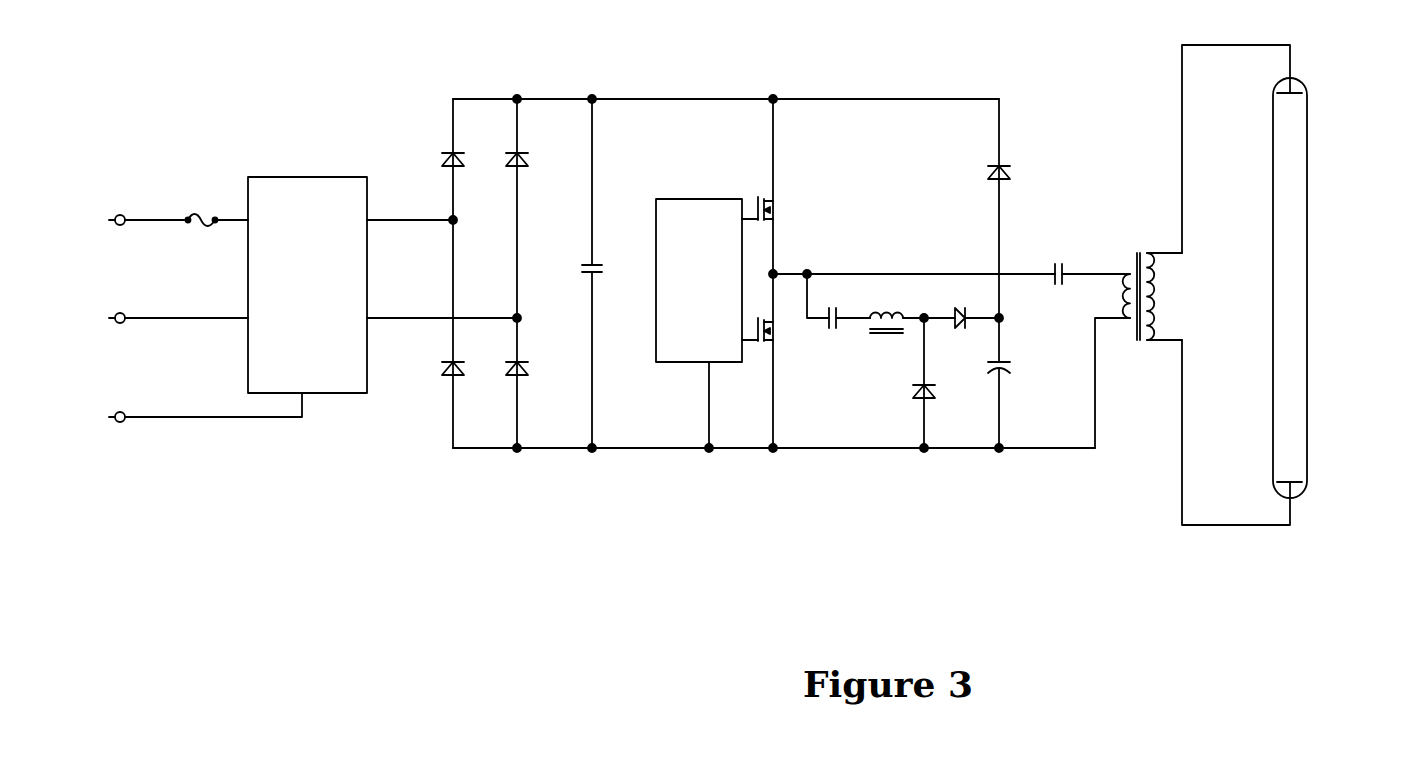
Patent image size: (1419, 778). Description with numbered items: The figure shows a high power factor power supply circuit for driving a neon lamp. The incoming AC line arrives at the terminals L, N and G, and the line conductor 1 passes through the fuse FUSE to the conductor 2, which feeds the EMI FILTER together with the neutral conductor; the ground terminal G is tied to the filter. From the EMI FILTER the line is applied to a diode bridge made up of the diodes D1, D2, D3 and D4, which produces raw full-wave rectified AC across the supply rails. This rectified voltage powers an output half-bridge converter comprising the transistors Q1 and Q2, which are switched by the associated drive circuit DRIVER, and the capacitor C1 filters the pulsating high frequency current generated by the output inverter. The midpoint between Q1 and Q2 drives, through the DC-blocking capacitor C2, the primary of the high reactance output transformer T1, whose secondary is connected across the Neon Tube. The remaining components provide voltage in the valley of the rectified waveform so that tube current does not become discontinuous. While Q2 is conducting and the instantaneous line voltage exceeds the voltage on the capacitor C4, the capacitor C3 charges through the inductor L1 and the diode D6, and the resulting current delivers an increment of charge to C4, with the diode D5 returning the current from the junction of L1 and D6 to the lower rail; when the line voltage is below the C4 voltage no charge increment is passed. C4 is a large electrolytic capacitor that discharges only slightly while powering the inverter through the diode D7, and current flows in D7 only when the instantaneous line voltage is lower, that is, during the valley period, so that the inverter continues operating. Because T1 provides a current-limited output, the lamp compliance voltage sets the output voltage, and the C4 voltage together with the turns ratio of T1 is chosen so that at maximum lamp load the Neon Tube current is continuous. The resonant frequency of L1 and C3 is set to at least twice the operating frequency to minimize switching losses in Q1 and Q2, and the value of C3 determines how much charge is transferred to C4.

The line input terminal L is at (106, 221).
The neutral input terminal N is at (105, 319).
The ground input terminal G is at (105, 418).
The input wires 1 is at (213, 311).
The fused line wire 2 is at (231, 212).
The fuse FUSE is at (196, 205).
The EMI filter EMI FILTER is at (307, 285).
The diode bridge diode D1 is at (436, 164).
The diode bridge diode D2 is at (431, 372).
The diode bridge diode D3 is at (532, 164).
The diode bridge diode D4 is at (535, 372).
The capacitor C1 is at (575, 273).
The drive circuit DRIVER is at (699, 323).
The half-bridge transistor Q1 is at (774, 330).
The half-bridge transistor Q2 is at (774, 209).
The capacitor C3 is at (849, 304).
The inductor L1 is at (886, 312).
The clamp diode D5 is at (909, 383).
The diode D6 is at (973, 309).
The diode D7 is at (978, 230).
The electrolytic capacitor C4 is at (1019, 405).
The capacitor C2 is at (1092, 260).
The high reactance output transformer T1 is at (1152, 282).
The neon tube Neon Tube is at (1332, 288).